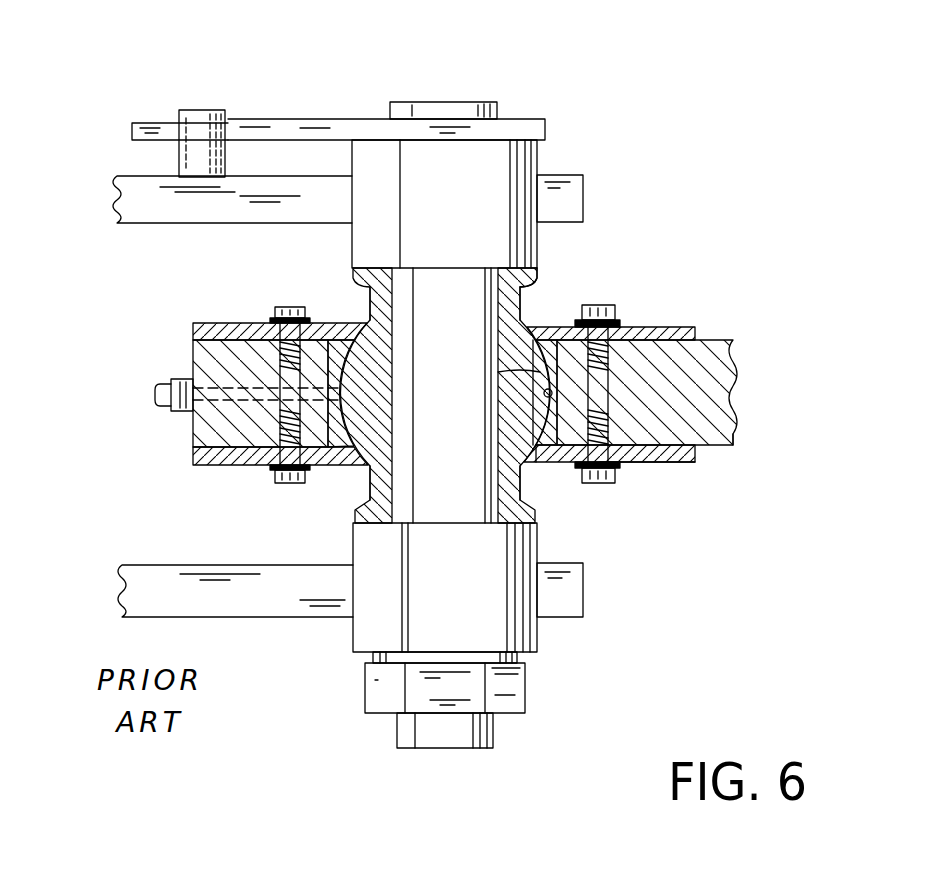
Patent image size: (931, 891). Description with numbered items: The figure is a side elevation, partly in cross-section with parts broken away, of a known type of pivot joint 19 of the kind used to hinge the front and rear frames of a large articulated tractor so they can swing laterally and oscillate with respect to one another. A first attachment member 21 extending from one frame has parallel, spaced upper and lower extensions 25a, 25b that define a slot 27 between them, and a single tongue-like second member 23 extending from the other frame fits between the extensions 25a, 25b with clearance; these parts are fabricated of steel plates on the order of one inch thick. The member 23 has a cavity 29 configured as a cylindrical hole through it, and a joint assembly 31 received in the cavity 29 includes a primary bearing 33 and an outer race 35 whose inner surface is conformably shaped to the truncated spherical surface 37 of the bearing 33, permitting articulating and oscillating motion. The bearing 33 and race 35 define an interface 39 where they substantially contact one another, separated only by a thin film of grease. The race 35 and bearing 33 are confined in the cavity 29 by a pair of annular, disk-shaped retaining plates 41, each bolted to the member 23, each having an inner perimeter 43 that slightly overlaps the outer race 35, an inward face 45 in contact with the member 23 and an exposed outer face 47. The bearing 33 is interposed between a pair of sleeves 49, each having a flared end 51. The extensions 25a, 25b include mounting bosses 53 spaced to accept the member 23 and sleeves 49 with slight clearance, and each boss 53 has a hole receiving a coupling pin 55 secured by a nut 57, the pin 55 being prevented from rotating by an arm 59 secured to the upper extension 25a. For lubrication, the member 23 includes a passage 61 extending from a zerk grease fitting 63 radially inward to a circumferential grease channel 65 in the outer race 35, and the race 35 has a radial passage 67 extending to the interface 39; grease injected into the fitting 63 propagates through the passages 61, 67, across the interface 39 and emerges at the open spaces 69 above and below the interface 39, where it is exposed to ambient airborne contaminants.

The pivot joint 19 is at (700, 238).
The first attachment member 21 is at (205, 396).
The second member 23 is at (722, 340).
The upper extension 25a is at (200, 213).
The lower extension 25b is at (165, 577).
The slot 27 is at (155, 446).
The cavity 29 is at (332, 462).
The joint assembly 31 is at (316, 516).
The primary bearing 33 is at (360, 328).
The outer race 35 is at (330, 320).
The spherical surface 37 is at (535, 470).
The interface 39 is at (560, 324).
The retaining plate 41 is at (667, 327).
The inner perimeter 43 is at (553, 465).
The inward face 45 is at (726, 440).
The outer face 47 is at (660, 467).
The sleeve 49 is at (525, 292).
The flared end 51 is at (530, 277).
The mounting boss 53 is at (525, 160).
The coupling pin 55 is at (440, 100).
The nut 57 is at (365, 690).
The arm 59 is at (305, 118).
The passage 61 is at (215, 462).
The zerk grease fitting 63 is at (155, 395).
The circumferential grease channel 65 is at (540, 372).
The radial passage 67 is at (546, 396).
The open space 69 is at (533, 327).